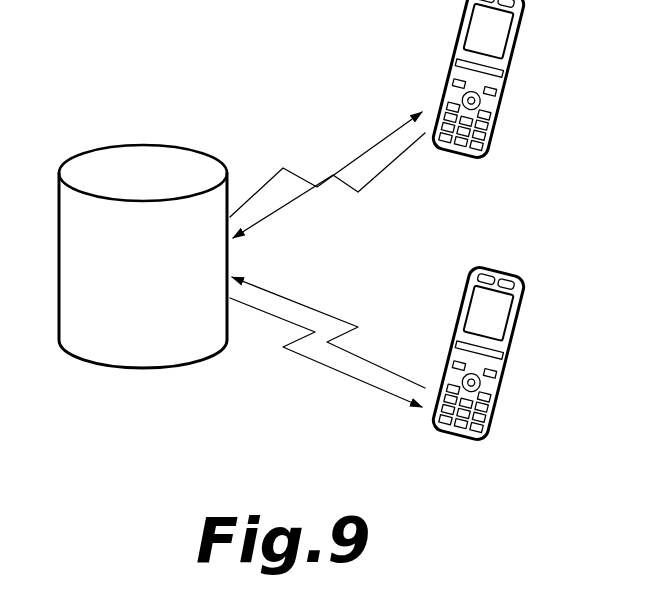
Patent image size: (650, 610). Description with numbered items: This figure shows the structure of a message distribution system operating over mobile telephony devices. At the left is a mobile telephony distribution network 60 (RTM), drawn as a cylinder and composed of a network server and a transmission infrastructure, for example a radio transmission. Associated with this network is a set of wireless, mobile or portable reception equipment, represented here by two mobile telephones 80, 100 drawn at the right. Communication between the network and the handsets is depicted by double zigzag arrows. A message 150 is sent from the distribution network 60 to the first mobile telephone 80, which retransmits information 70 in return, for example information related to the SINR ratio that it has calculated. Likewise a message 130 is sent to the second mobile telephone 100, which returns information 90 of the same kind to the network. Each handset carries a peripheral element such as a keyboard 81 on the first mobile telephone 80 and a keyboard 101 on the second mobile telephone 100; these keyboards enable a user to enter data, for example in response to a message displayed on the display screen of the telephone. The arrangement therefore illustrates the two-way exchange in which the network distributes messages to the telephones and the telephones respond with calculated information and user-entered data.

The mobile telephony distribution network 60 is at (142, 157).
The information 70 is at (340, 200).
The mobile telephone 80 is at (437, 70).
The keyboard 81 is at (482, 102).
The information 90 is at (317, 307).
The mobile telephone 100 is at (418, 423).
The keyboard 101 is at (484, 384).
The message 130 is at (297, 355).
The message 150 is at (320, 153).